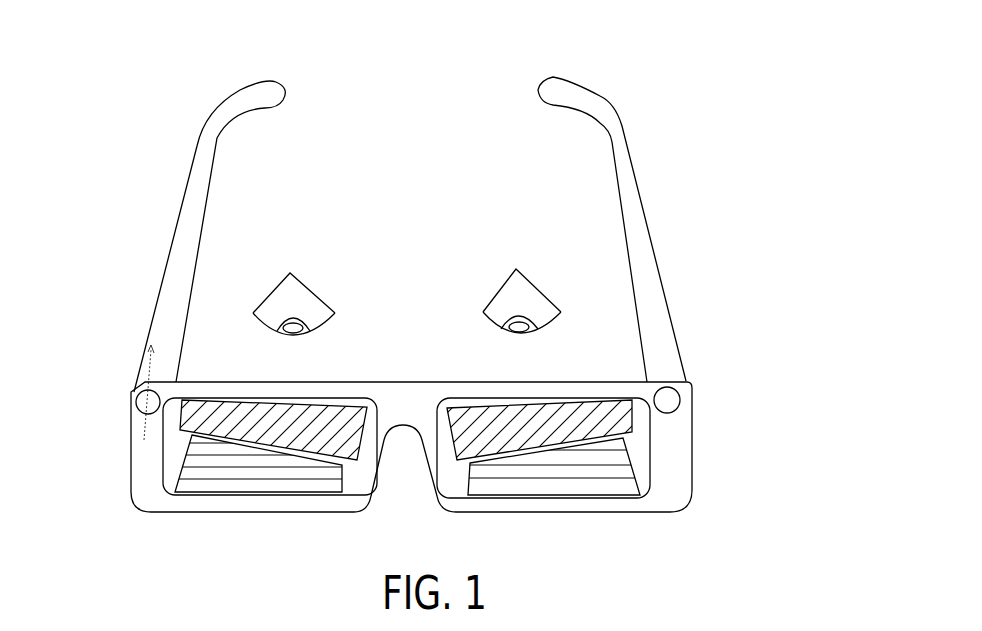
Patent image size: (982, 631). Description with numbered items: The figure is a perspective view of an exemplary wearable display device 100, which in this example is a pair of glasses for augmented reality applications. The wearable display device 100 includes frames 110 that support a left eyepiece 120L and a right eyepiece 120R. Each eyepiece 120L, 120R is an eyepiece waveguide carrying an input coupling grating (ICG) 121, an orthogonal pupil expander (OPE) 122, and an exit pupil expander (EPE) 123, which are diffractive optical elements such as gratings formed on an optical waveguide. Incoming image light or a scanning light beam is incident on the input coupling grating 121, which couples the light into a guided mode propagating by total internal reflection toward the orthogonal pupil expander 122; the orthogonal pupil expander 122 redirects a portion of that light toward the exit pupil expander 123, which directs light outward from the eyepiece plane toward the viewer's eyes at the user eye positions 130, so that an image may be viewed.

The wearable display device 100 is at (760, 34).
The frames 110 is at (210, 162).
The left eyepiece 120L is at (147, 464).
The right eyepiece 120R is at (677, 453).
The input coupling grating (ICG) 121 is at (675, 390).
The orthogonal pupil expander (OPE) 122 is at (592, 400).
The exit pupil expander (EPE) 123 is at (582, 483).
The user eye positions 130 is at (486, 300).